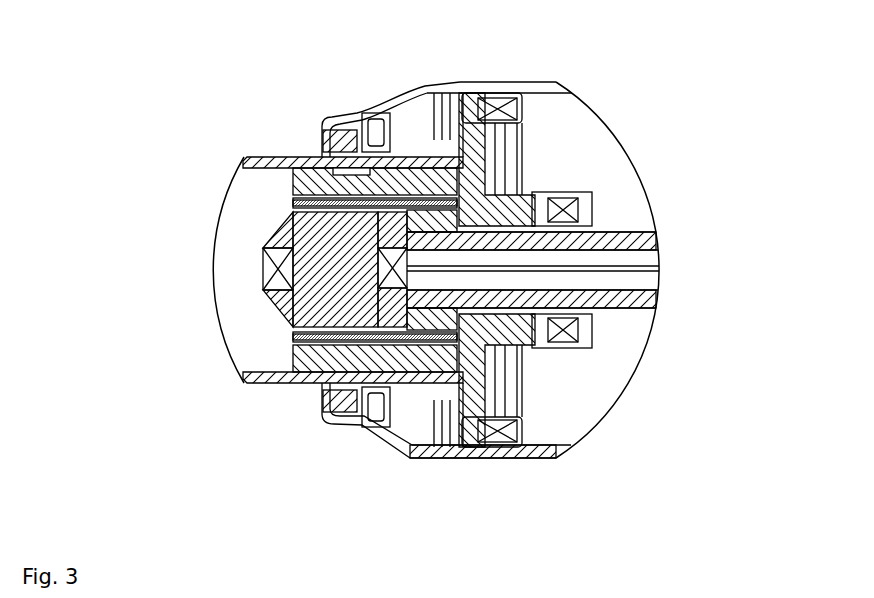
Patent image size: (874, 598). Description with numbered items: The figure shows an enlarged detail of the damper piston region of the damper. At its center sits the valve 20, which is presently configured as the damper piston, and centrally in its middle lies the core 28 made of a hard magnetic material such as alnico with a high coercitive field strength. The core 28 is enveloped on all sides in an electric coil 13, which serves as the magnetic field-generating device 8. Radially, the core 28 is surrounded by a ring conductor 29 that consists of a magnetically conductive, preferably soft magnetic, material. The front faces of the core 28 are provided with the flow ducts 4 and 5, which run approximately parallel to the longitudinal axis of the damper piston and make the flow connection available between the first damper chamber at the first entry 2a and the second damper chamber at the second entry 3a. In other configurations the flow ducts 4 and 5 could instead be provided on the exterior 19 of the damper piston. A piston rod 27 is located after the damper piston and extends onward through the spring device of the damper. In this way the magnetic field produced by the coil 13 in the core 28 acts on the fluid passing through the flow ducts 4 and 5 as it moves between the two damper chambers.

The first entry 2a is at (487, 130).
The second entry 3a is at (280, 207).
The flow duct 4 is at (293, 197).
The flow duct 5 is at (282, 335).
The magnetic field-generating device 8 is at (260, 257).
The coil 13 is at (260, 285).
The exterior 19 is at (293, 378).
The valve 20 is at (243, 216).
The piston rod 27 is at (617, 320).
The core 28 is at (297, 303).
The ring conductor 29 is at (412, 150).